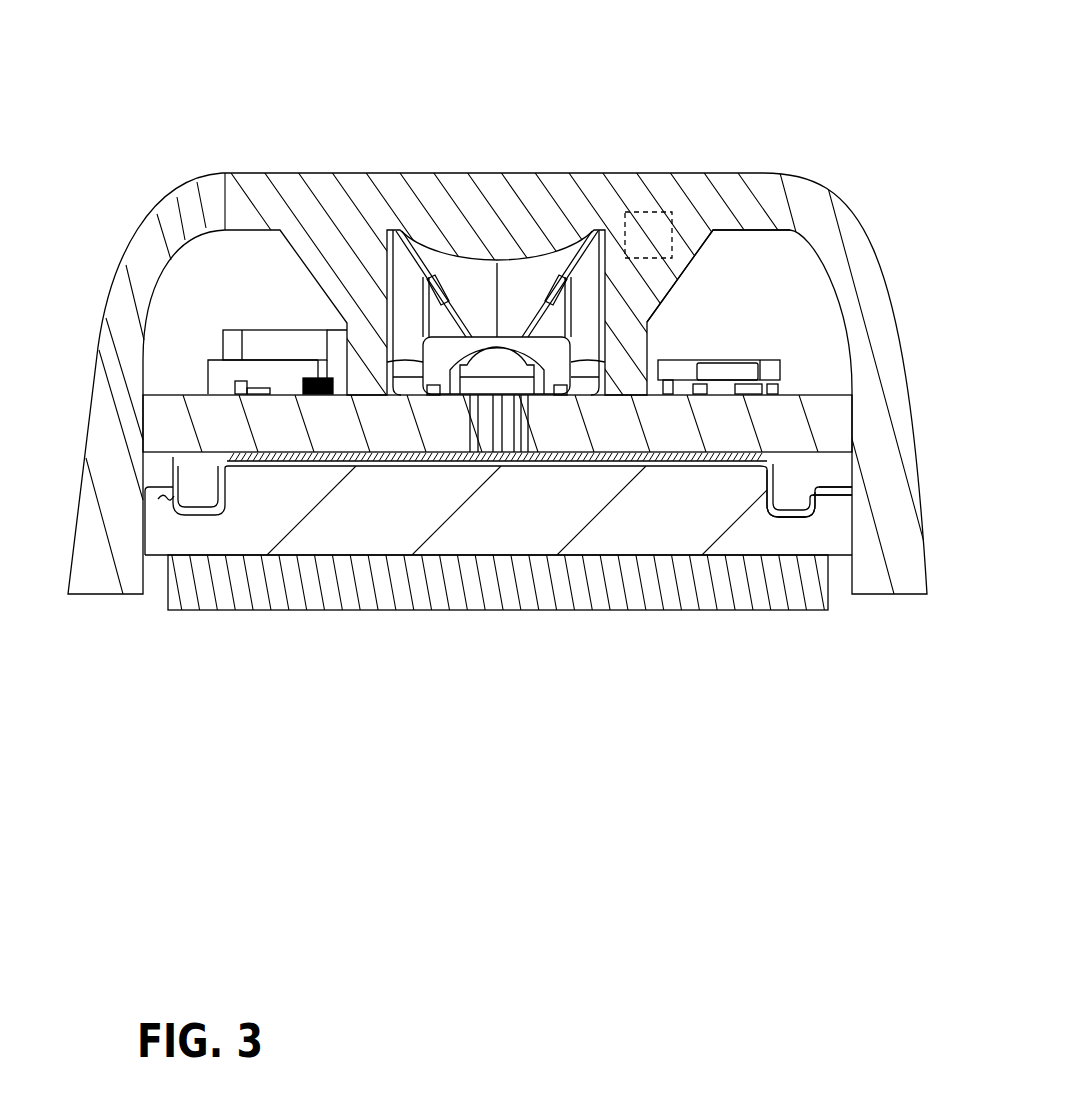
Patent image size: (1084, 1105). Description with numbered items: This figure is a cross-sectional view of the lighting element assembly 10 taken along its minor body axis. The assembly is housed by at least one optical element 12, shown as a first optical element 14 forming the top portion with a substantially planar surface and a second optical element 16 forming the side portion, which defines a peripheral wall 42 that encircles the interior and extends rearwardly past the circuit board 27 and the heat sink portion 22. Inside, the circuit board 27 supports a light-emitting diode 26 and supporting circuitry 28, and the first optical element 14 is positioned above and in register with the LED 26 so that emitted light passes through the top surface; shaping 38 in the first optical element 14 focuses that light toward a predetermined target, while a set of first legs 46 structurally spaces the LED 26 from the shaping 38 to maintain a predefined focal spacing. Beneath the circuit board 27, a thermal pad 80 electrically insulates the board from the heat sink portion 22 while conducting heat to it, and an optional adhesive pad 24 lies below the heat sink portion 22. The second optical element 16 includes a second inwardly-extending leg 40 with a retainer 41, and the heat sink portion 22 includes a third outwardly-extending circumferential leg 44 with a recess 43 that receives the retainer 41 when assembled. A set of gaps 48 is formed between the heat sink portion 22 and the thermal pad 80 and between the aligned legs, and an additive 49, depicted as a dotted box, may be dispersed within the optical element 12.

The lighting element assembly 10 is at (510, 42).
The optical element 12 is at (96, 246).
The first optical element 14 is at (298, 200).
The second optical element 16 is at (180, 215).
The heat sink portion 22 is at (660, 510).
The adhesive pad 24 is at (725, 585).
The light-emitting diode 26 is at (507, 360).
The circuit board 27 is at (791, 476).
The supporting circuitry 28 is at (232, 343).
The shaping 38 is at (443, 236).
The second inwardly-extending leg 40 is at (819, 418).
The retainer 41 is at (797, 500).
The peripheral wall 42 is at (936, 539).
The recess 43 is at (792, 527).
The third outwardly-extending circumferential leg 44 is at (832, 510).
The first legs 46 is at (660, 323).
The gaps 48 is at (318, 462).
The additive 49 is at (640, 212).
The thermal pad 80 is at (447, 461).